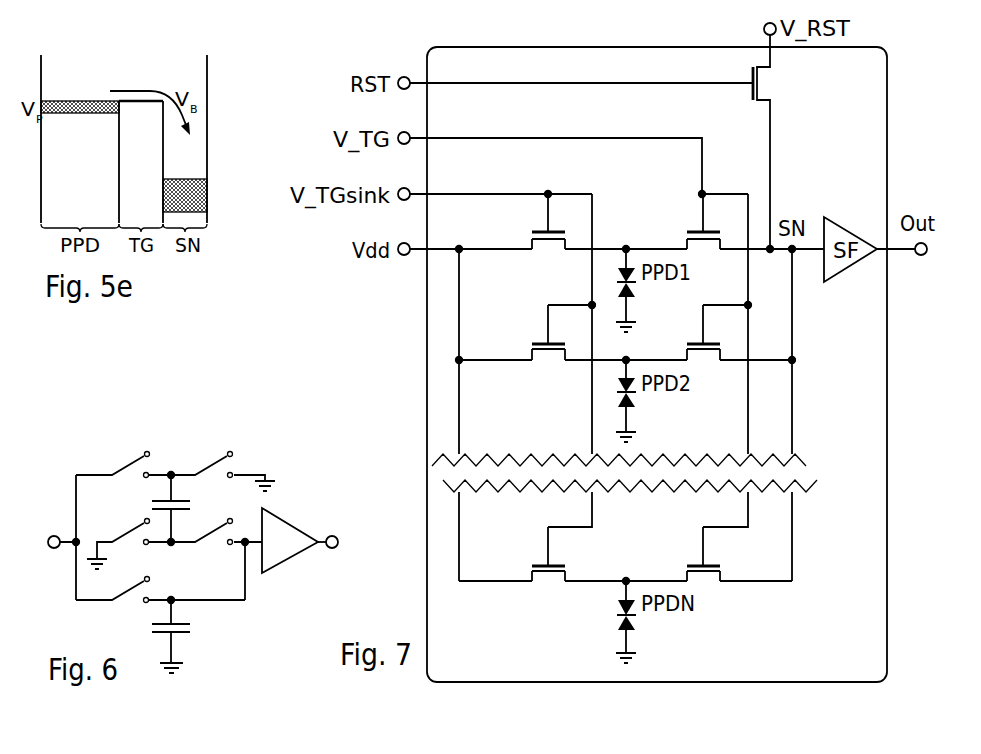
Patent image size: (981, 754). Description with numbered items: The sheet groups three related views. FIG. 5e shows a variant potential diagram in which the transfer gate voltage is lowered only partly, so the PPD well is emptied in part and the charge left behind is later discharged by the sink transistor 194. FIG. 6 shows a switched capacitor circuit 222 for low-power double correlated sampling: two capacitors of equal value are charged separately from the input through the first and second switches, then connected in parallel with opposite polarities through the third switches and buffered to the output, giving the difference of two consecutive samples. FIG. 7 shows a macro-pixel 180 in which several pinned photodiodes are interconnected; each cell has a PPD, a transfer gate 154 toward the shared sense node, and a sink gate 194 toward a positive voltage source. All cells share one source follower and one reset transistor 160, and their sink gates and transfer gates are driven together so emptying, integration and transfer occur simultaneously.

In FIG. 7, the transfer gate 154 is at (697, 228).
In FIG. 7, the reset transistor 160 is at (751, 93).
In FIG. 7, the macro-pixel 180 is at (873, 86).
In FIG. 7, the sink gate 194 is at (543, 226).
In FIG. 6, the switched capacitor circuit 222 is at (288, 451).